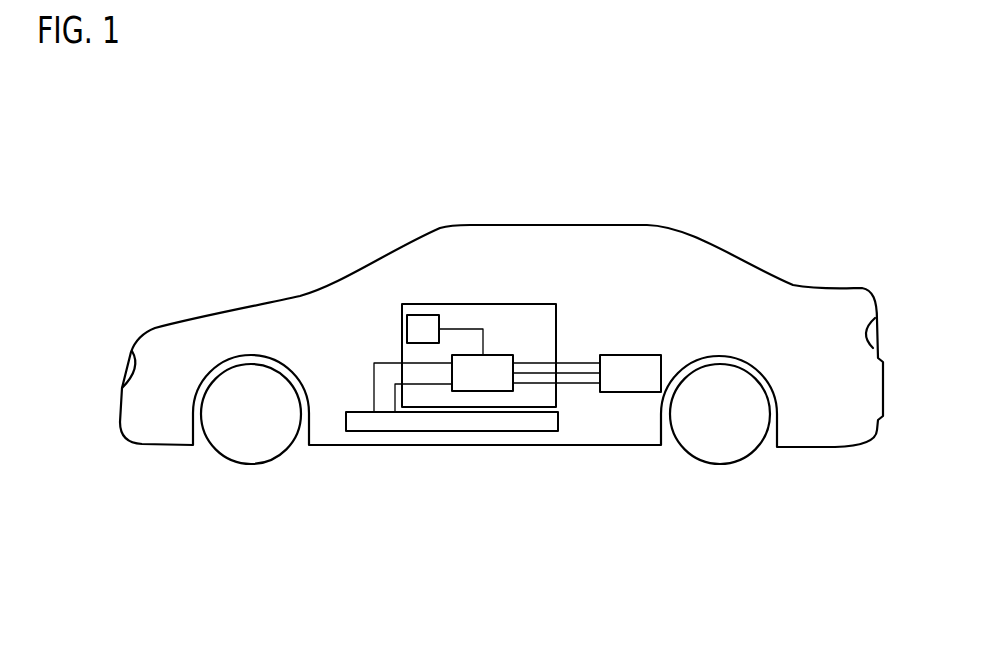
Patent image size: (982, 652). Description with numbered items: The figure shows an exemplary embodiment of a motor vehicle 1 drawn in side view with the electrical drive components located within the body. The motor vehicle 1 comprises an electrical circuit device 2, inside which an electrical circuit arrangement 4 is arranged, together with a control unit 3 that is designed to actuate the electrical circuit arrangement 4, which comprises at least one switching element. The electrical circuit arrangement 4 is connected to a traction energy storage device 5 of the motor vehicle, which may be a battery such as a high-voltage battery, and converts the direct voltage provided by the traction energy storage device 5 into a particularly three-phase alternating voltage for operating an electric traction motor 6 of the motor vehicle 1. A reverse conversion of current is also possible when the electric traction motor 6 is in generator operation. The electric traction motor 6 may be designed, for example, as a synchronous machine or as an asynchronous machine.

The motor vehicle 1 is at (731, 211).
The electrical circuit device 2 is at (494, 304).
The control unit 3 is at (421, 315).
The electrical circuit arrangement 4 is at (500, 355).
The traction energy storage device 5 is at (420, 431).
The electric traction motor 6 is at (641, 355).